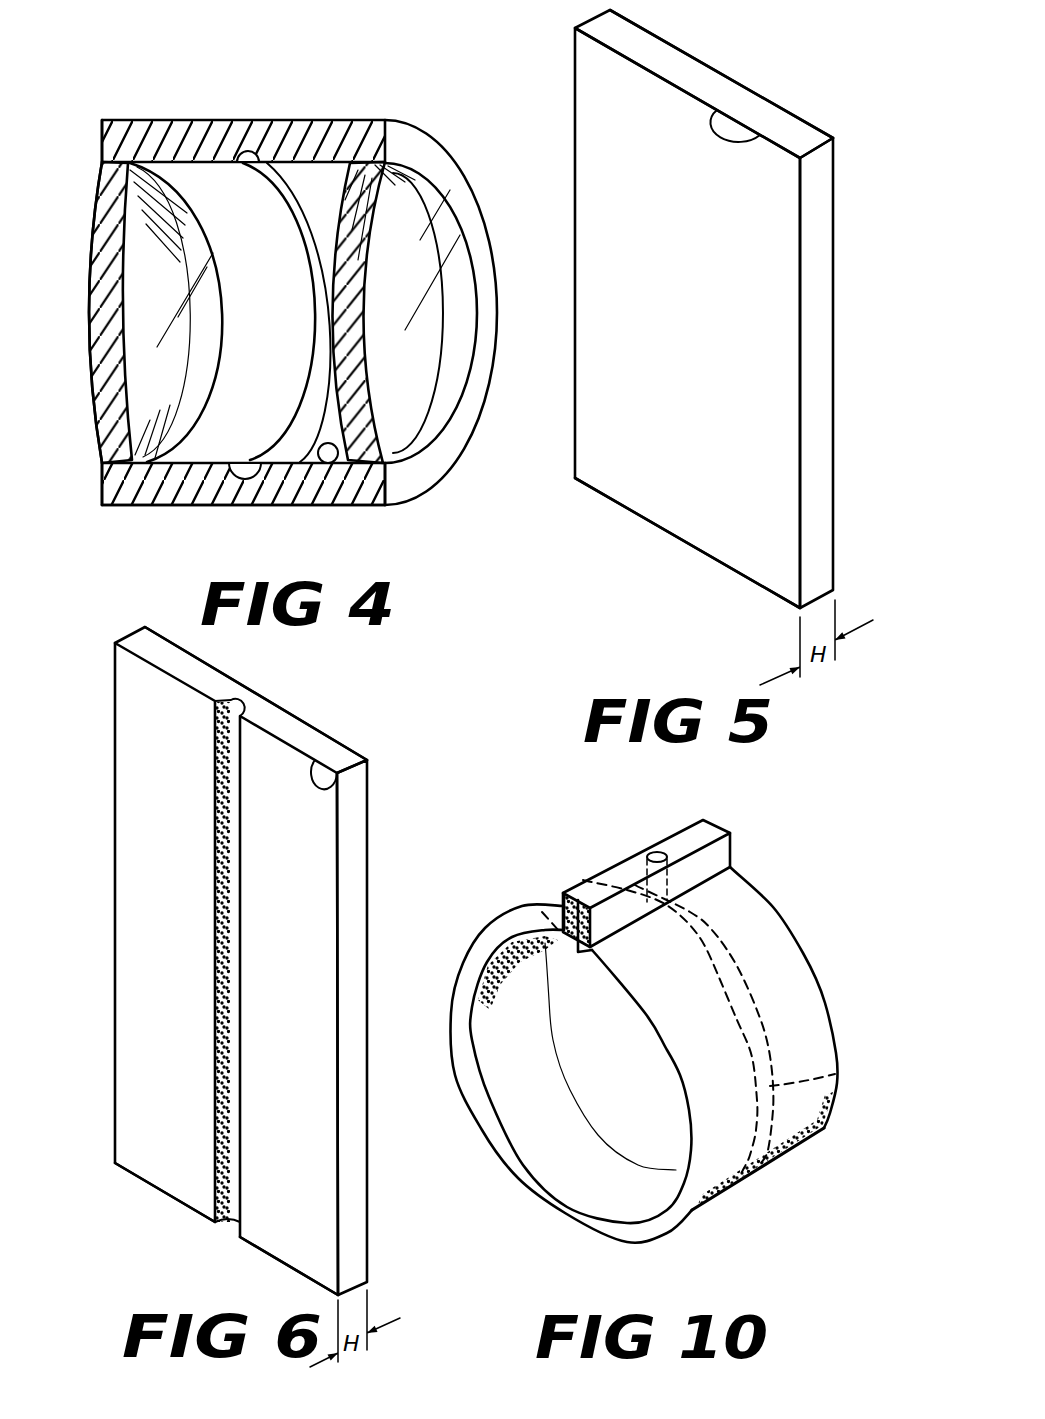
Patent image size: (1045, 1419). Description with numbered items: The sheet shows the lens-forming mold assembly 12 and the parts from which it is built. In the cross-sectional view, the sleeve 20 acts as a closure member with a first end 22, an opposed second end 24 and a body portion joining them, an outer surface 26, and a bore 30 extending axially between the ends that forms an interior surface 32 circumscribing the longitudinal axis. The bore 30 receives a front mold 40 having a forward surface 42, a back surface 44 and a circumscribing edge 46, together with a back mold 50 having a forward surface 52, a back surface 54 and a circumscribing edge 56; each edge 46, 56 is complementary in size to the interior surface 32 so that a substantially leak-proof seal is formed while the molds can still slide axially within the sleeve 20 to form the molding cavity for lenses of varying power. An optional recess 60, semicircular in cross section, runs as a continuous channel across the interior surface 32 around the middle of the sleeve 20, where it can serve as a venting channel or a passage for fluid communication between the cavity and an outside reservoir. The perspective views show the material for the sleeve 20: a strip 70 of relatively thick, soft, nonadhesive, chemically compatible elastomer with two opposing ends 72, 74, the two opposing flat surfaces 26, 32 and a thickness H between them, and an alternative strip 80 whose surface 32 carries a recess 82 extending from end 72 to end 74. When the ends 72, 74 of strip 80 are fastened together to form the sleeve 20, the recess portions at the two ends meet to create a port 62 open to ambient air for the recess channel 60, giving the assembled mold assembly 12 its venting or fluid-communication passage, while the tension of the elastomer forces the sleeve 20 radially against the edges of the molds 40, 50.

In FIG. 4, the mold assembly 12 is at (163, 74).
In FIG. 4, the sleeve 20 is at (153, 128).
In FIG. 10, the sleeve 20 is at (745, 940).
In FIG. 4, the first end 22 is at (102, 137).
In FIG. 4, the second end 24 is at (385, 143).
In FIG. 4, the outer surface 26 is at (272, 508).
In FIG. 5, the outer surface 26 is at (748, 88).
In FIG. 6, the outer surface 26 is at (308, 723).
In FIG. 4, the bore 30 is at (282, 358).
In FIG. 4, the interior surface 32 is at (345, 483).
In FIG. 5, the interior surface 32 is at (663, 415).
In FIG. 6, the interior surface 32 is at (182, 1167).
In FIG. 4, the front mold 40 is at (101, 286).
In FIG. 4, the forward surface 42 is at (93, 399).
In FIG. 4, the back surface 44 is at (124, 368).
In FIG. 4, the edge 46 is at (102, 483).
In FIG. 4, the back mold 50 is at (358, 390).
In FIG. 4, the forward surface 52 is at (337, 293).
In FIG. 4, the back surface 54 is at (362, 282).
In FIG. 4, the edge 56 is at (394, 500).
In FIG. 4, the recess 60 is at (250, 150).
In FIG. 10, the recess 60 is at (835, 1072).
In FIG. 10, the port 62 is at (653, 852).
In FIG. 5, the strip 70 is at (665, 60).
In FIG. 6, the strip 70 is at (128, 1072).
In FIG. 5, the end 72 is at (760, 138).
In FIG. 6, the end 72 is at (345, 792).
In FIG. 10, the end 72 is at (552, 906).
In FIG. 5, the end 74 is at (758, 588).
In FIG. 6, the end 74 is at (302, 1275).
In FIG. 10, the end 74 is at (735, 853).
In FIG. 6, the strip 80 is at (142, 645).
In FIG. 10, the strip 80 is at (810, 977).
In FIG. 6, the recess 82 is at (233, 697).